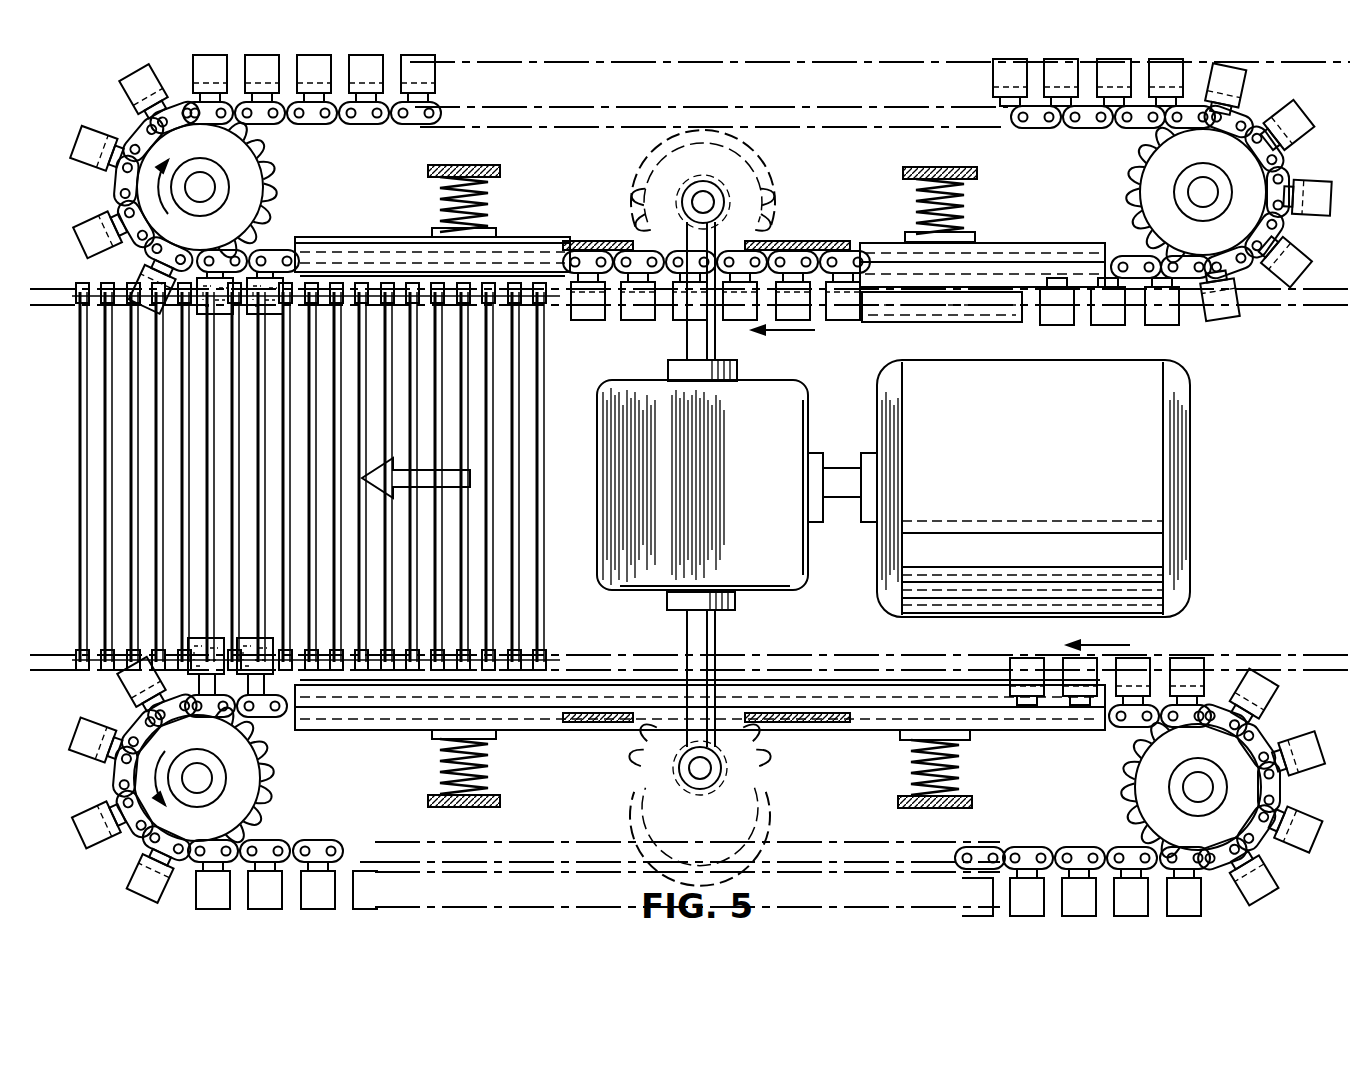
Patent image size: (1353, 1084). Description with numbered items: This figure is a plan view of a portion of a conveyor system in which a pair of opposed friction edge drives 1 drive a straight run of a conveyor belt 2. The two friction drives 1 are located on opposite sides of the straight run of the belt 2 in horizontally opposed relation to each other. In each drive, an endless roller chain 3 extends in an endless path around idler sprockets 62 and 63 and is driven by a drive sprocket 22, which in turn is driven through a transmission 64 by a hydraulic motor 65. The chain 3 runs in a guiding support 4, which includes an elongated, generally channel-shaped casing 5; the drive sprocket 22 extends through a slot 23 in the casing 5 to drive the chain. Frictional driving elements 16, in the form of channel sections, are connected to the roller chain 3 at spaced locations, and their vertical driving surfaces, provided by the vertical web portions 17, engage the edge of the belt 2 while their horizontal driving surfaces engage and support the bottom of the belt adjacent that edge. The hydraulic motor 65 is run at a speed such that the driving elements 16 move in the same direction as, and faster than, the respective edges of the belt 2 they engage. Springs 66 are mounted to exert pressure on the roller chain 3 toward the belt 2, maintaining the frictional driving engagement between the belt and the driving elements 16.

The frictional edge drive 1 is at (1268, 95).
The conveyor belt 2 is at (550, 358).
The endless roller chain 3 is at (345, 136).
The guiding support 4 is at (588, 232).
The channel-shaped casing 5 is at (1010, 247).
The frictional driving element 16 is at (93, 128).
The vertical web portion 17 is at (637, 290).
The drive sprocket 22 is at (740, 177).
The slot 23 is at (767, 237).
The idler sprocket 62 is at (277, 192).
The idler sprocket 63 is at (1160, 157).
The transmission 64 is at (795, 407).
The hydraulic motor 65 is at (1195, 407).
The spring 66 is at (445, 195).